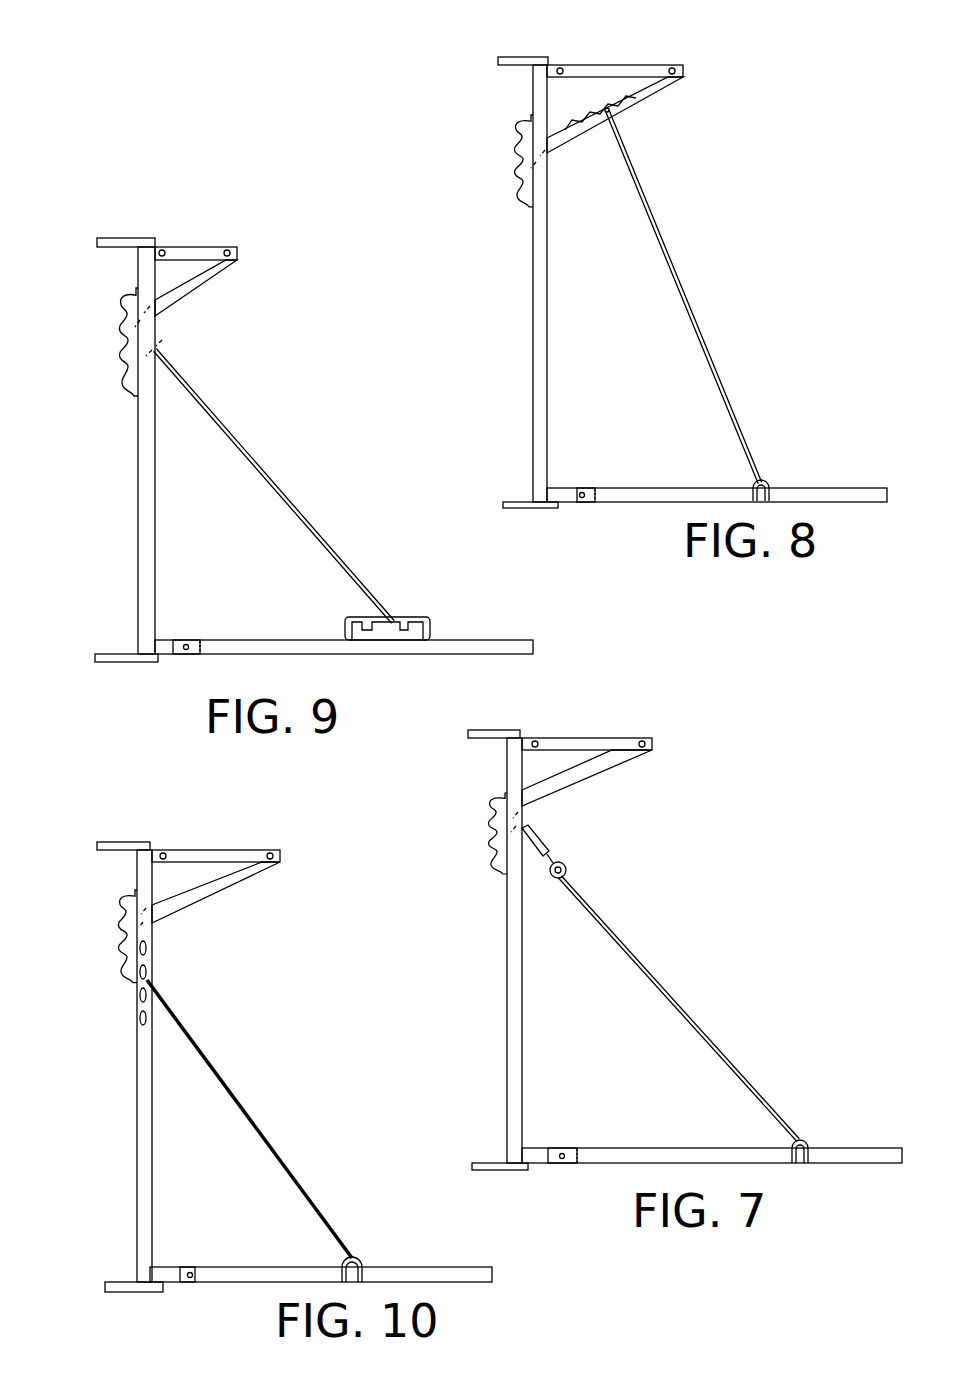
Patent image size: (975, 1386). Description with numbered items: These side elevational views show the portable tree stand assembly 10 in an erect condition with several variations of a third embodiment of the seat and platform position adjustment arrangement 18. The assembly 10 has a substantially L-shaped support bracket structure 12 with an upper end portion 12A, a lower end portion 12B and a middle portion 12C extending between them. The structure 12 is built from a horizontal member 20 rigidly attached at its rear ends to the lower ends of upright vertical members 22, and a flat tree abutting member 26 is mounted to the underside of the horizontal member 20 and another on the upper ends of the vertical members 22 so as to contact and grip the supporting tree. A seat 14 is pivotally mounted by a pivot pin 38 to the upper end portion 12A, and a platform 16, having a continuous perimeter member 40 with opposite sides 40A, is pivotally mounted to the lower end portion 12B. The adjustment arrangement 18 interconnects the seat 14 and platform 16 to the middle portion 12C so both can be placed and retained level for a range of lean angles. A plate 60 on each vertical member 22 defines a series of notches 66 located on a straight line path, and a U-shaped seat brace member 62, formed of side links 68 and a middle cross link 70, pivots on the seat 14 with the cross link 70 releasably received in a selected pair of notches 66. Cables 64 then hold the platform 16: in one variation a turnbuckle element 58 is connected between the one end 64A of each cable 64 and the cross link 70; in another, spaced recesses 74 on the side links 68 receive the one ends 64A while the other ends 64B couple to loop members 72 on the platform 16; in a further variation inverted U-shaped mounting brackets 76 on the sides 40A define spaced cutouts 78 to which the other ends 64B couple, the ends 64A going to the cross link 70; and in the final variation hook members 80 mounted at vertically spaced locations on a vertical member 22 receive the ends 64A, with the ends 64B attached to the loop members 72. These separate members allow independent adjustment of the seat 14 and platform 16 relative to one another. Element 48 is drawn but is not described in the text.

In FIG. 8, the portable tree stand assembly 10 is at (708, 48).
In FIG. 9, the portable tree stand assembly 10 is at (262, 212).
In FIG. 10, the portable tree stand assembly 10 is at (272, 835).
In FIG. 7, the portable tree stand assembly 10 is at (657, 706).
In FIG. 8, the support bracket structure 12 is at (654, 286).
In FIG. 9, the support bracket structure 12 is at (296, 440).
In FIG. 10, the support bracket structure 12 is at (262, 1060).
In FIG. 7, the support bracket structure 12 is at (652, 939).
In FIG. 8, the upper end portion 12A is at (533, 72).
In FIG. 9, the upper end portion 12A is at (140, 257).
In FIG. 10, the upper end portion 12A is at (133, 865).
In FIG. 7, the upper end portion 12A is at (508, 745).
In FIG. 8, the lower end portion 12B is at (562, 487).
In FIG. 9, the lower end portion 12B is at (160, 638).
In FIG. 10, the lower end portion 12B is at (136, 1268).
In FIG. 7, the lower end portion 12B is at (533, 1146).
In FIG. 8, the middle portion 12C is at (548, 403).
In FIG. 9, the middle portion 12C is at (148, 462).
In FIG. 10, the middle portion 12C is at (135, 1110).
In FIG. 7, the middle portion 12C is at (505, 1048).
In FIG. 8, the seat 14 is at (615, 43).
In FIG. 9, the seat 14 is at (186, 213).
In FIG. 10, the seat 14 is at (210, 821).
In FIG. 7, the seat 14 is at (587, 704).
In FIG. 8, the platform 16 is at (690, 485).
In FIG. 9, the platform 16 is at (512, 637).
In FIG. 10, the platform 16 is at (425, 1265).
In FIG. 7, the platform 16 is at (665, 1143).
In FIG. 8, the seat and platform position adjustment arrangement 18 is at (638, 288).
In FIG. 9, the seat and platform position adjustment arrangement 18 is at (237, 476).
In FIG. 10, the seat and platform position adjustment arrangement 18 is at (212, 1072).
In FIG. 7, the seat and platform position adjustment arrangement 18 is at (645, 956).
In FIG. 8, the horizontal member 20 is at (563, 503).
In FIG. 9, the horizontal member 20 is at (167, 657).
In FIG. 10, the horizontal member 20 is at (170, 1268).
In FIG. 7, the horizontal member 20 is at (537, 1165).
In FIG. 8, the vertical members 22 is at (548, 315).
In FIG. 9, the vertical members 22 is at (151, 548).
In FIG. 10, the vertical members 22 is at (151, 1136).
In FIG. 7, the vertical members 22 is at (523, 1025).
In FIG. 8, the tree abutting member 26 is at (516, 57).
In FIG. 9, the tree abutting member 26 is at (110, 238).
In FIG. 10, the tree abutting member 26 is at (117, 842).
In FIG. 7, the tree abutting member 26 is at (490, 731).
In FIG. 8, the pivot pin 38 is at (562, 66).
In FIG. 9, the pivot pin 38 is at (162, 250).
In FIG. 10, the pivot pin 38 is at (163, 850).
In FIG. 7, the pivot pin 38 is at (538, 742).
In FIG. 9, the platform perimeter member 40 is at (442, 640).
In FIG. 9, the opposite sides of platform perimeter member 40A is at (450, 656).
In FIG. 8, the lower bracket 48 is at (590, 499).
In FIG. 9, the lower bracket 48 is at (190, 653).
In FIG. 10, the lower bracket 48 is at (194, 1284).
In FIG. 7, the lower bracket 48 is at (566, 1165).
In FIG. 7, the turnbuckle element 58 is at (535, 836).
In FIG. 8, the plate 60 is at (528, 182).
In FIG. 9, the plate 60 is at (145, 370).
In FIG. 10, the plate 60 is at (140, 932).
In FIG. 7, the plate 60 is at (510, 860).
In FIG. 8, the seat brace member 62 is at (674, 135).
In FIG. 9, the seat brace member 62 is at (225, 300).
In FIG. 10, the seat brace member 62 is at (249, 896).
In FIG. 7, the seat brace member 62 is at (631, 782).
In FIG. 8, the cables 64 is at (714, 296).
In FIG. 9, the cables 64 is at (289, 482).
In FIG. 10, the cables 64 is at (263, 1131).
In FIG. 7, the cables 64 is at (692, 1001).
In FIG. 8, the one end of cable 64A is at (612, 116).
In FIG. 9, the one end of cable 64A is at (160, 346).
In FIG. 10, the one end of cable 64A is at (152, 990).
In FIG. 7, the one end of cable 64A is at (568, 872).
In FIG. 8, the other end of cable 64B is at (753, 455).
In FIG. 9, the other end of cable 64B is at (370, 600).
In FIG. 10, the other end of cable 64B is at (340, 1255).
In FIG. 7, the other end of cable 64B is at (782, 1125).
In FIG. 8, the notches 66 is at (492, 184).
In FIG. 9, the notches 66 is at (103, 342).
In FIG. 10, the notches 66 is at (95, 945).
In FIG. 7, the notches 66 is at (474, 846).
In FIG. 8, the side links 68 is at (574, 140).
In FIG. 9, the side links 68 is at (196, 288).
In FIG. 10, the side links 68 is at (222, 890).
In FIG. 7, the side links 68 is at (605, 772).
In FIG. 8, the middle cross link 70 is at (517, 158).
In FIG. 9, the middle cross link 70 is at (125, 322).
In FIG. 10, the middle cross link 70 is at (125, 913).
In FIG. 7, the middle cross link 70 is at (492, 812).
In FIG. 8, the loop members 72 is at (770, 486).
In FIG. 7, the loop members 72 is at (808, 1142).
In FIG. 8, the recesses 74 is at (625, 98).
In FIG. 9, the inverted U-shaped mounting bracket 76 is at (342, 628).
In FIG. 9, the cutouts 78 is at (412, 630).
In FIG. 10, the hook members 80 is at (138, 1020).